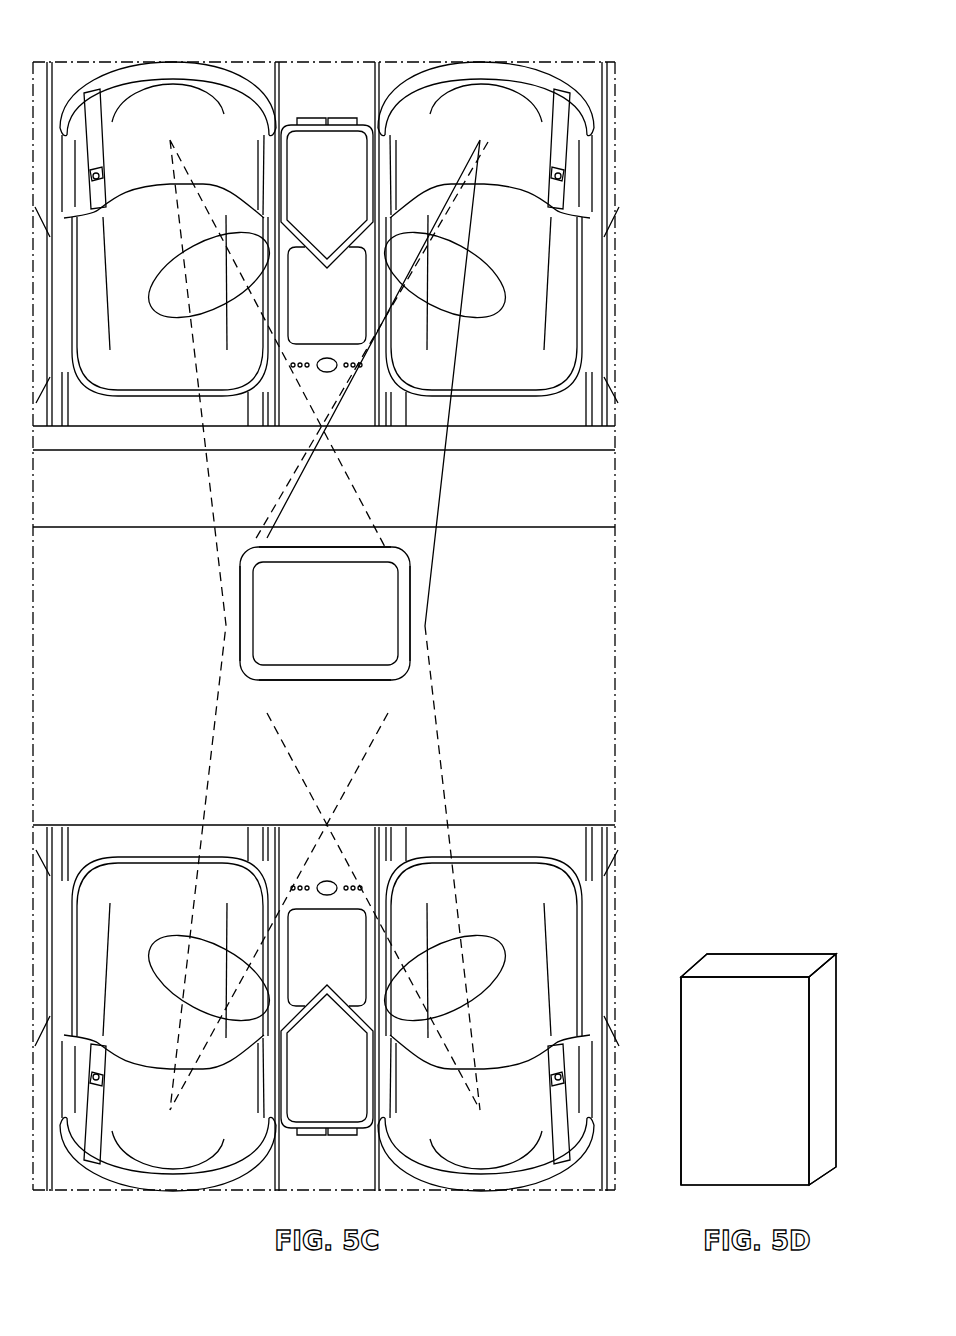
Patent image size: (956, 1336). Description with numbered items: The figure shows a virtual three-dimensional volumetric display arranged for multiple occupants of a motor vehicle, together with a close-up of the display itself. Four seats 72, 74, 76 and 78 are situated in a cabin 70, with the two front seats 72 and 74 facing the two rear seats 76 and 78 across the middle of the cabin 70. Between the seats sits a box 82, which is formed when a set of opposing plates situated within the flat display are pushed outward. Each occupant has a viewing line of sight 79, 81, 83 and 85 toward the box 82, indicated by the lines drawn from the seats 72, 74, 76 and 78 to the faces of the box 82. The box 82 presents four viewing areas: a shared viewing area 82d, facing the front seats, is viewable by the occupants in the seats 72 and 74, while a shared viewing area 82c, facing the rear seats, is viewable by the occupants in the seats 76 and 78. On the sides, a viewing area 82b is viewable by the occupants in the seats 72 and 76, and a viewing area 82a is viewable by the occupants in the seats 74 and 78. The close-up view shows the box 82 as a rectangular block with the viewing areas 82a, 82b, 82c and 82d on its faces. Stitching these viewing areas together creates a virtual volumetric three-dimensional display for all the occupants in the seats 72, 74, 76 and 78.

In FIG. 5C, the cabin 70 is at (583, 488).
In FIG. 5C, the seat 72 is at (130, 127).
In FIG. 5C, the seat 74 is at (512, 126).
In FIG. 5C, the seat 76 is at (88, 1000).
In FIG. 5C, the seat 78 is at (565, 935).
In FIG. 5C, the viewing line of sight 79 is at (163, 318).
In FIG. 5C, the viewing line of sight 81 is at (491, 318).
In FIG. 5C, the viewing line of sight 83 is at (170, 933).
In FIG. 5C, the viewing line of sight 85 is at (484, 933).
In FIG. 5C, the box 82 is at (372, 554).
In FIG. 5D, the box 82 is at (788, 952).
In FIG. 5C, the viewing area 82a is at (410, 614).
In FIG. 5D, the viewing area 82a is at (820, 1070).
In FIG. 5C, the viewing area 82b is at (240, 614).
In FIG. 5D, the viewing area 82b is at (677, 1038).
In FIG. 5C, the shared viewing area 82c is at (338, 682).
In FIG. 5D, the shared viewing area 82c is at (713, 1148).
In FIG. 5C, the shared viewing area 82d is at (343, 548).
In FIG. 5D, the shared viewing area 82d is at (732, 950).